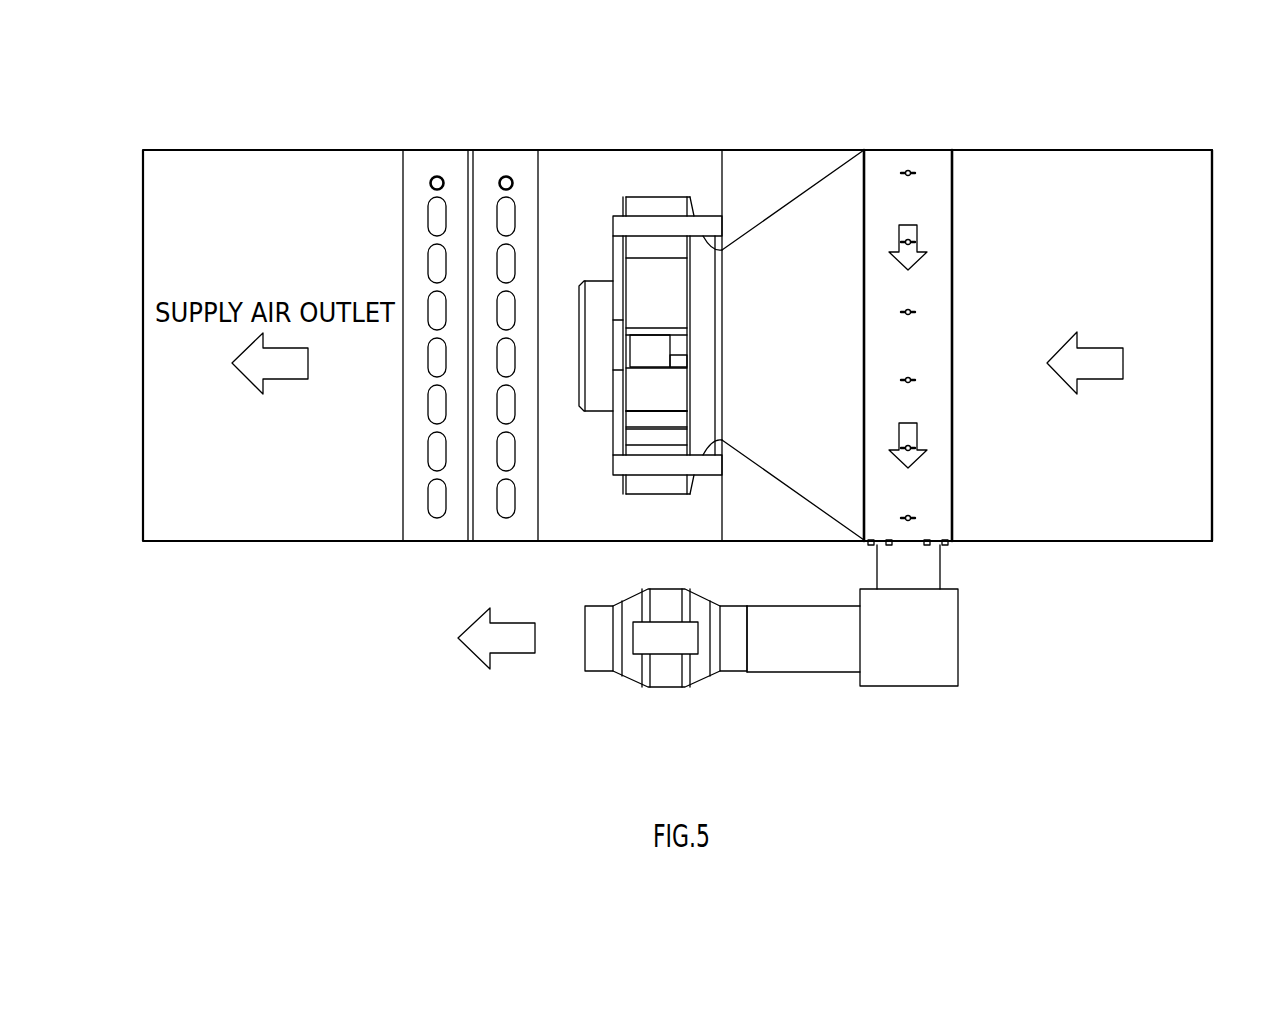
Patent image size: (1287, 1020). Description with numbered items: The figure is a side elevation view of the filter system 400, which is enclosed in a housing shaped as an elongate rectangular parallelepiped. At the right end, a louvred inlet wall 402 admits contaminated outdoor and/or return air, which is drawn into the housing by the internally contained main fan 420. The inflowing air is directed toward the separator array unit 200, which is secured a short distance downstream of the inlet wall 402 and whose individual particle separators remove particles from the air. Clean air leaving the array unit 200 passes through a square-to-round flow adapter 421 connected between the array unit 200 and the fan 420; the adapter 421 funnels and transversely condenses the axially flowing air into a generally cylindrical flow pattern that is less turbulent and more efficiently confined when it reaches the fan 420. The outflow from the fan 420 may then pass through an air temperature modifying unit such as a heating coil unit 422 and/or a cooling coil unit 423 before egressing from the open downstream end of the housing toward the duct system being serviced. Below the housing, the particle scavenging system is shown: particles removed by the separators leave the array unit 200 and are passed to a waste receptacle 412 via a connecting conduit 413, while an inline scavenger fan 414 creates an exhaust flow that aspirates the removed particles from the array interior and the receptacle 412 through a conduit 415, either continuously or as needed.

The filter system 400 is at (872, 80).
The louvred inlet wall 402 is at (1212, 357).
The separator array unit 200 is at (930, 172).
The main fan 420 is at (657, 207).
The square-to-round flow adapter 421 is at (815, 202).
The heating coil unit 422 is at (517, 163).
The cooling coil unit 423 is at (430, 163).
The waste receptacle 412 is at (908, 678).
The connecting conduit 413 is at (931, 562).
The inline scavenger fan 414 is at (665, 687).
The conduit 415 is at (802, 658).